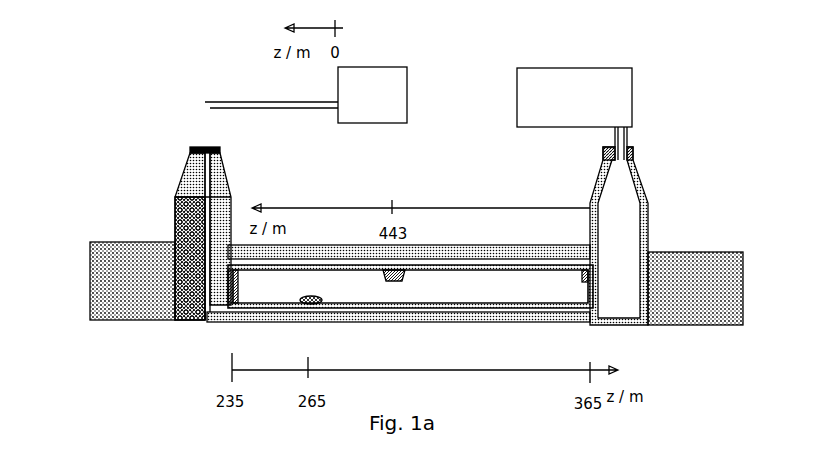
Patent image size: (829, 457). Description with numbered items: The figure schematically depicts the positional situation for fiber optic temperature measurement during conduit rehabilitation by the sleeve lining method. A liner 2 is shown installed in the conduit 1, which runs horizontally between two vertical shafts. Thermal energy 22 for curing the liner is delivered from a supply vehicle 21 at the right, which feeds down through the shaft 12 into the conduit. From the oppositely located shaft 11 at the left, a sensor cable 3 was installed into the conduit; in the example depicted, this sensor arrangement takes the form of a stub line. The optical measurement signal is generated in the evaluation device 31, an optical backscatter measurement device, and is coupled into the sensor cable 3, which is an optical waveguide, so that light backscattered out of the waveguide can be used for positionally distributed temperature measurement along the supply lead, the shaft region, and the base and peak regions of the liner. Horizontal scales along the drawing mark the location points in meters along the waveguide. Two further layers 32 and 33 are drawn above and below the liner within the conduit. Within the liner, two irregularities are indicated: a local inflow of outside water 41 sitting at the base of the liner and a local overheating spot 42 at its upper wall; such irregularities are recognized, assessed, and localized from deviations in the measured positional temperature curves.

The conduit 1 is at (690, 268).
The liner 2 is at (562, 287).
The sensor cable 3 is at (210, 117).
The shaft 11 is at (178, 212).
The shaft 12 is at (650, 213).
The supply vehicle 21 is at (574, 97).
The thermal energy 22 is at (623, 136).
The evaluation device 31 is at (372, 95).
The upper pipe 32 is at (480, 262).
The lower pipe 33 is at (457, 315).
The local inflows of outside water 41 is at (298, 306).
The local overheating spots 42 is at (399, 283).